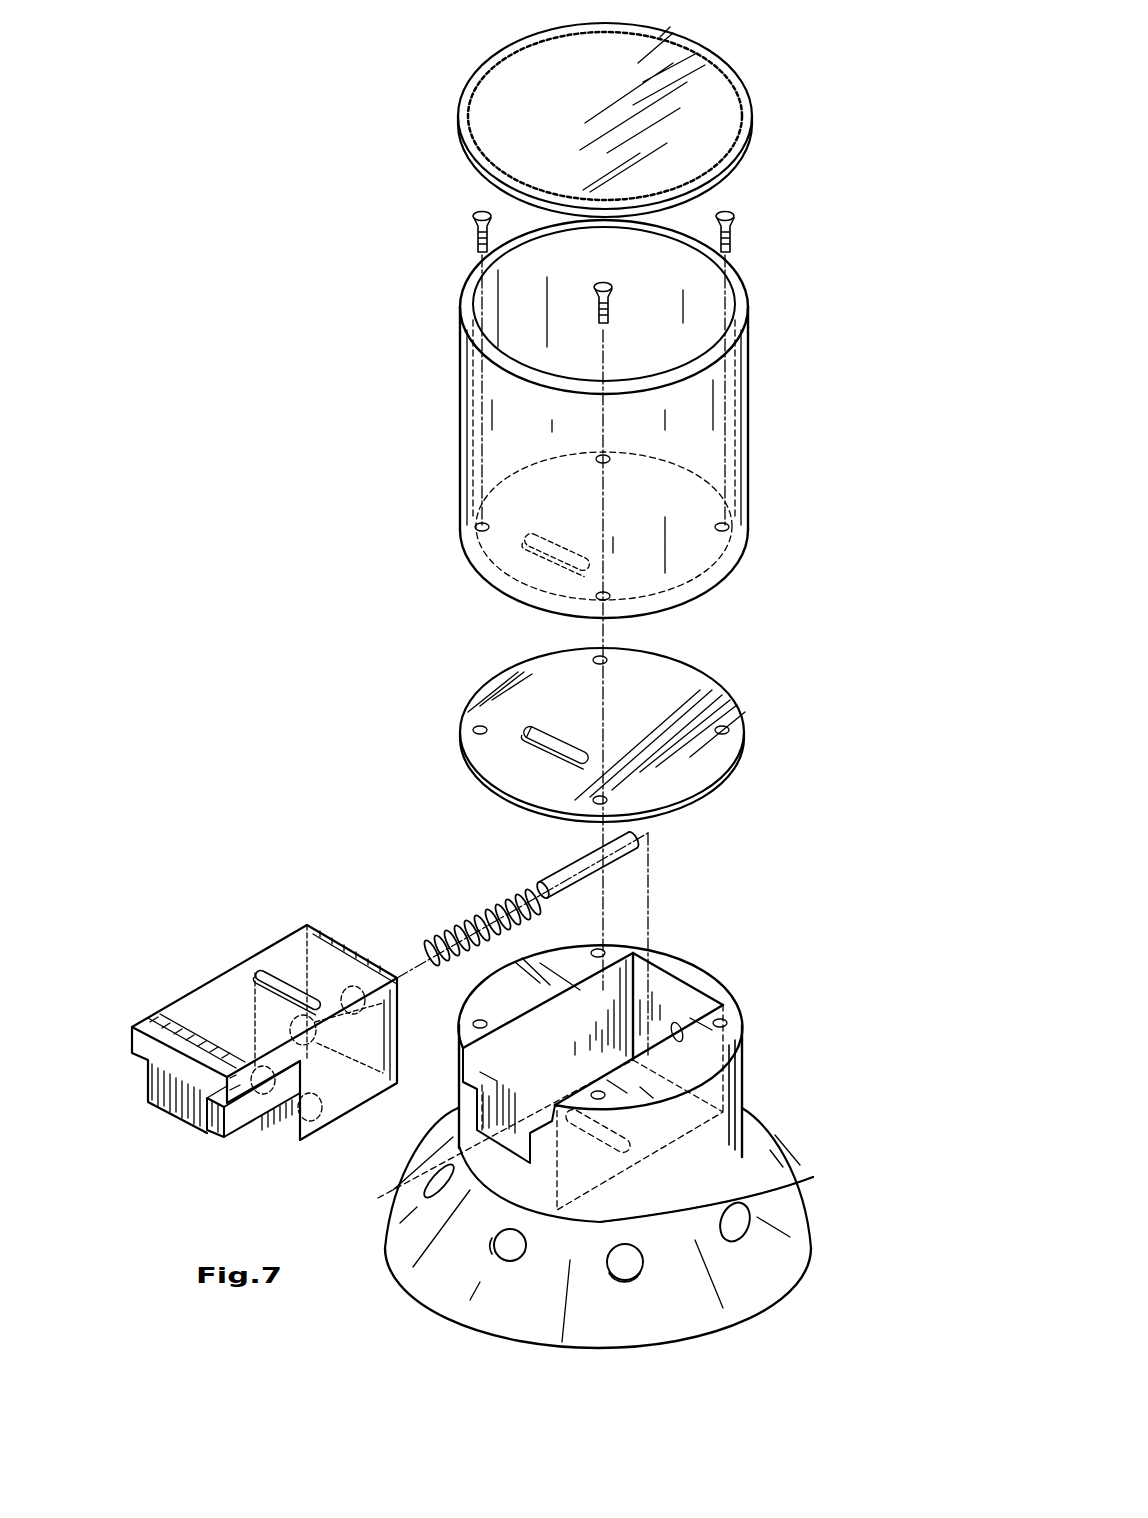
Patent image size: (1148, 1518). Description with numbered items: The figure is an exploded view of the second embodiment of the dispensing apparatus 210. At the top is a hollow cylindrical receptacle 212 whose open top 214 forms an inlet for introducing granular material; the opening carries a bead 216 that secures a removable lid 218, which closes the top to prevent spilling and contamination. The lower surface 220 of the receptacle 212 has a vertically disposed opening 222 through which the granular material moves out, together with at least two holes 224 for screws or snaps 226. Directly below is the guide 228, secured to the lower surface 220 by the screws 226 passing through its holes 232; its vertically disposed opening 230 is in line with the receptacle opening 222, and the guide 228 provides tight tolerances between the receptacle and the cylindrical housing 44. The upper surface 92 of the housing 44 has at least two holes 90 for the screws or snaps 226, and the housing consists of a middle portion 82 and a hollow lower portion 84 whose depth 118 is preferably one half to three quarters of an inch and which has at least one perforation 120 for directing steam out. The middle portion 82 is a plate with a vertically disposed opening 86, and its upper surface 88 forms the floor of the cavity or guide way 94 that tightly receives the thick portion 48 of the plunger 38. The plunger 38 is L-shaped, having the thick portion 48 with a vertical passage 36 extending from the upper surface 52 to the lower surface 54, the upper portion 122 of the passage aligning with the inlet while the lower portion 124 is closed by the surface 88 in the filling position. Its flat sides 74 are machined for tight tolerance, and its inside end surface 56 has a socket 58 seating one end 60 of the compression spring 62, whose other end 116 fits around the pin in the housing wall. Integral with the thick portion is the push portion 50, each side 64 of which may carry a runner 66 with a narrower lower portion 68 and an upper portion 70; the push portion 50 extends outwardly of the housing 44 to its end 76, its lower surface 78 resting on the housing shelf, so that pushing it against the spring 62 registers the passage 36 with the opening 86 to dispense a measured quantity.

The removable lid 218 is at (700, 145).
The screws or snaps 226 is at (597, 288).
The open top 214 is at (685, 330).
The bead 216 is at (493, 365).
The hollow cylindrical receptacle 212 is at (673, 508).
The dispensing apparatus 210 is at (392, 457).
The receptacle opening 222 is at (565, 555).
The lower surface of the receptacle 220 is at (707, 590).
The holes 224 is at (597, 602).
The holes 232 is at (480, 728).
The guide 228 is at (592, 707).
The guide opening 230 is at (522, 738).
The spring end 116 is at (529, 897).
The compression spring 62 is at (477, 917).
The spring end 60 is at (427, 948).
The upper surface of the housing 92 is at (527, 985).
The cavity or guide way 94 is at (670, 993).
The holes or inlets 90 is at (728, 1025).
The upper portion of the passage 122 is at (297, 977).
The upper surface of the plunger 52 is at (238, 980).
The socket 58 is at (350, 952).
The push portion 50 is at (155, 1015).
The upper portion of the runner 70 is at (240, 1067).
The runner 66 is at (235, 1075).
The inside end surface 56 is at (400, 1003).
The passage 36 is at (318, 1062).
The plunger 38 is at (385, 1055).
The end of the push portion 76 is at (157, 1084).
The side of the push portion 64 is at (218, 1119).
The lower portion of the runner 68 is at (220, 1118).
The lower surface of the push portion 78 is at (221, 1122).
The thick portion 48 is at (283, 1108).
The sides of the plunger 74 is at (285, 1124).
The lower portion of the passage 124 is at (313, 1132).
The lower surface of the plunger 54 is at (337, 1120).
The opening 86 is at (392, 1197).
The cylindrical housing 44 is at (647, 1205).
The middle portion 82 is at (723, 1162).
The upper surface of the middle portion 88 is at (713, 1173).
The lower portion 84 is at (747, 1195).
The depth of the lower portion 118 is at (468, 1217).
The perforation 120 is at (493, 1252).